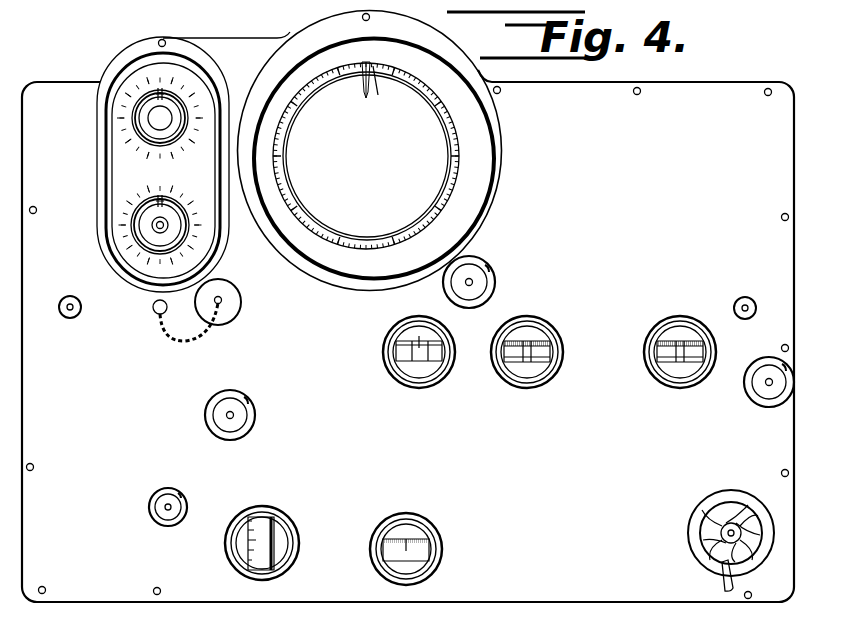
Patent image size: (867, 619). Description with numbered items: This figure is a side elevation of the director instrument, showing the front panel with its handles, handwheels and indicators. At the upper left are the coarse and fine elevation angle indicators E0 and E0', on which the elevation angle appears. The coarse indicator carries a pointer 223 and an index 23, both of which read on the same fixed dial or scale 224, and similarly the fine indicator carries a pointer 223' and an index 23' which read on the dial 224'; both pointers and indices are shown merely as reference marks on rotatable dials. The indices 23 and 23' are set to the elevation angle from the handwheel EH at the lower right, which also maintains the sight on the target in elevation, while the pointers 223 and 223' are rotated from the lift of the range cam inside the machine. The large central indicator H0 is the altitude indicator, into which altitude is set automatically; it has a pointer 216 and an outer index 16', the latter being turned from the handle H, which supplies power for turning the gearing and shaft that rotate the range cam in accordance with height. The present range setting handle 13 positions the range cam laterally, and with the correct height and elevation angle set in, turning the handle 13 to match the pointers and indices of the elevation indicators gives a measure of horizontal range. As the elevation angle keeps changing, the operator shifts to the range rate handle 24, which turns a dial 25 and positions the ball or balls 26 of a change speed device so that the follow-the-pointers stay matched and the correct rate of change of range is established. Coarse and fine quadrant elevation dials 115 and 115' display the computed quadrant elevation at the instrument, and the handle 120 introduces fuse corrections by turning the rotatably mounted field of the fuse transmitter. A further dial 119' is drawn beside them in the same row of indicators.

The pointer 223 is at (133, 107).
The fixed dial or scale 224 is at (188, 55).
The index 23 is at (194, 86).
The coarse elevation angle indicator Eo is at (83, 130).
The pointer 223' is at (123, 226).
The dial 224' is at (170, 300).
The index 23' is at (110, 190).
The fine elevation angle indicator Eo' is at (71, 242).
The ball or balls 26 is at (458, 142).
The pointer 216 is at (363, 83).
The outer index 16' is at (384, 92).
The altitude indicator Ho is at (367, 156).
The handle H is at (488, 268).
The coarse quadrant elevation dial 115 is at (419, 341).
The fine quadrant elevation dial 115' is at (527, 341).
The meter 119' is at (680, 341).
The handle 120 is at (763, 405).
The present range setting handle 13 is at (206, 419).
The range rate handle 24 is at (150, 507).
The dial 25 is at (252, 520).
The handwheel EH is at (692, 527).